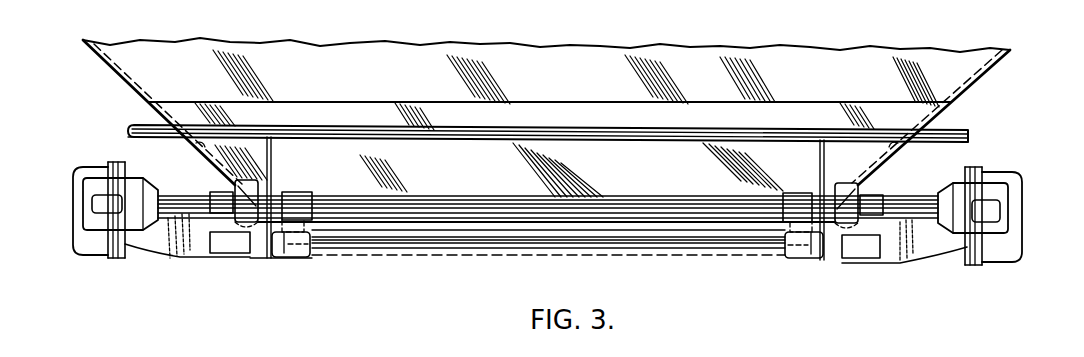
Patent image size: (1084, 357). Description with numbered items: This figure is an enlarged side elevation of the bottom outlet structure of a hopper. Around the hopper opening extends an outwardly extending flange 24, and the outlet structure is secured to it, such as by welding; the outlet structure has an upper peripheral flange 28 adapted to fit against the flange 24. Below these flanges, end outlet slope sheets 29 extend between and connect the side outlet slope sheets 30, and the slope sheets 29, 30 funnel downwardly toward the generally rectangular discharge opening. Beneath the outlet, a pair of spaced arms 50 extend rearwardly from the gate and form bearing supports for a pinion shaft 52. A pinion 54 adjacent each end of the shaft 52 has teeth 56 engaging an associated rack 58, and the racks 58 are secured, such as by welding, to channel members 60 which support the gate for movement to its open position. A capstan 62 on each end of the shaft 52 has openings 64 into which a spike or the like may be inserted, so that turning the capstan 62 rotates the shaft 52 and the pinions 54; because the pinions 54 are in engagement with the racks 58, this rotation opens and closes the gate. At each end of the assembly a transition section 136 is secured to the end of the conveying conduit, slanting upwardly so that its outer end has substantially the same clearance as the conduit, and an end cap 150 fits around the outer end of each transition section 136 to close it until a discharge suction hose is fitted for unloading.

The outwardly extending flange 24 is at (132, 124).
The upper peripheral flange 28 is at (130, 137).
The end outlet slope sheets 29 is at (190, 148).
The side outlet slope sheets 30 is at (641, 175).
The spaced arms 50 is at (293, 190).
The pinion shaft 52 is at (475, 197).
The pinion 54 is at (222, 214).
The teeth 56 is at (256, 180).
The rack 58 is at (240, 254).
The channel members 60 is at (280, 257).
The capstan 62 is at (85, 226).
The openings 64 is at (92, 204).
The transition section 136 is at (165, 257).
The end cap 150 is at (74, 255).